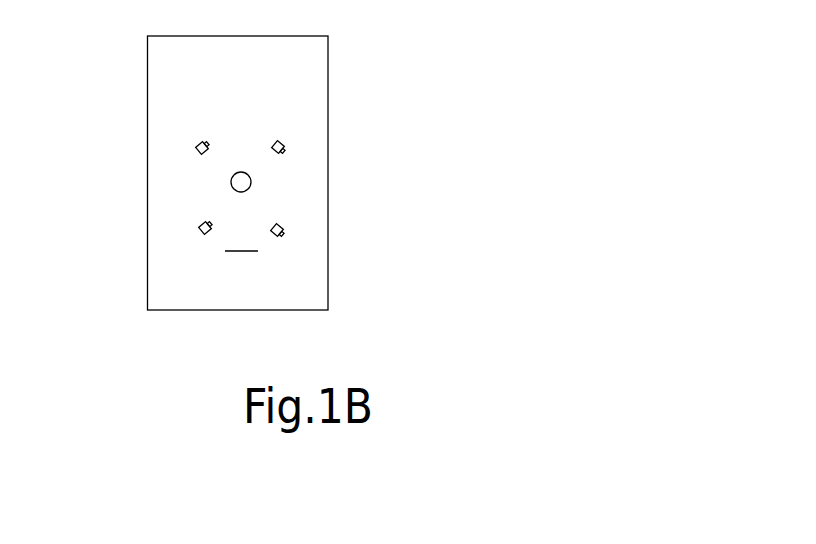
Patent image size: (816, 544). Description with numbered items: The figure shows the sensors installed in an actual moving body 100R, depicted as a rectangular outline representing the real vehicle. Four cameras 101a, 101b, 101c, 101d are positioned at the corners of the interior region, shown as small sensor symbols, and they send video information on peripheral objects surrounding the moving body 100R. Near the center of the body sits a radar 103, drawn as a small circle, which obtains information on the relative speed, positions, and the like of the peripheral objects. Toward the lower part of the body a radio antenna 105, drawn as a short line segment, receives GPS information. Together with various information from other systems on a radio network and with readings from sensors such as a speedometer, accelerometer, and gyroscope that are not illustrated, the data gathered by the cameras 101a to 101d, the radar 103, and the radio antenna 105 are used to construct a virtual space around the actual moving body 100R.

The actual moving body 100R is at (313, 36).
The camera 101a is at (286, 145).
The camera 101b is at (285, 227).
The camera 101c is at (195, 149).
The camera 101d is at (198, 230).
The radar 103 is at (251, 180).
The radio antenna 105 is at (258, 251).